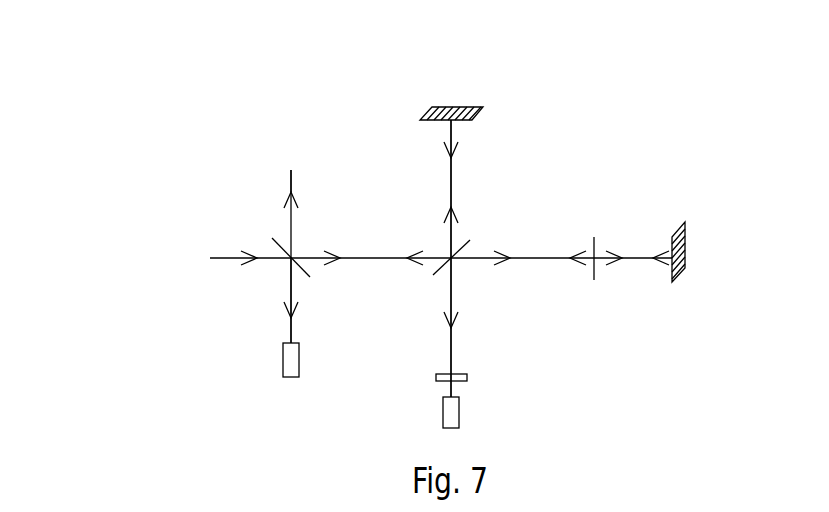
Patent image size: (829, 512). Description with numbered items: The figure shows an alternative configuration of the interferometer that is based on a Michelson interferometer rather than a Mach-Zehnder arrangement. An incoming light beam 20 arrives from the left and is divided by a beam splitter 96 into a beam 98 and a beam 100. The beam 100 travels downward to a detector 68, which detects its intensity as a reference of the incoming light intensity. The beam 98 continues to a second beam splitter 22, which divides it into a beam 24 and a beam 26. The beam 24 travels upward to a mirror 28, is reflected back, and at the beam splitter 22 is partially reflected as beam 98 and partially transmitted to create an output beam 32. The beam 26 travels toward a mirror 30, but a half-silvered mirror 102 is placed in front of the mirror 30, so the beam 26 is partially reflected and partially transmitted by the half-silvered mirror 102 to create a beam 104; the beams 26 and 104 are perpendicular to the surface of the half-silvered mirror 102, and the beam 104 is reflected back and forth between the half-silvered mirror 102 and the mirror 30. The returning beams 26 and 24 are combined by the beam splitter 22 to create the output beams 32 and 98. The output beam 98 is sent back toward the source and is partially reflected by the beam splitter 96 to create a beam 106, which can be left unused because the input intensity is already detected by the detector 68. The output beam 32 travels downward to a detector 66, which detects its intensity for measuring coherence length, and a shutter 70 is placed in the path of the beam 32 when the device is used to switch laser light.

The incoming light beam 20 is at (225, 253).
The beam splitter 96 is at (275, 233).
The beam 106 is at (293, 182).
The beam 98 is at (383, 255).
The beam splitter 22 is at (436, 272).
The beam 24 is at (452, 193).
The mirror 28 is at (457, 105).
The output beam 32 is at (455, 341).
The shutter 70 is at (467, 378).
The detector 66 is at (459, 413).
The beam 100 is at (291, 330).
The detector 68 is at (299, 362).
The beam 26 is at (543, 255).
The half-silvered mirror 102 is at (595, 278).
The beam 104 is at (635, 255).
The mirror 30 is at (685, 250).